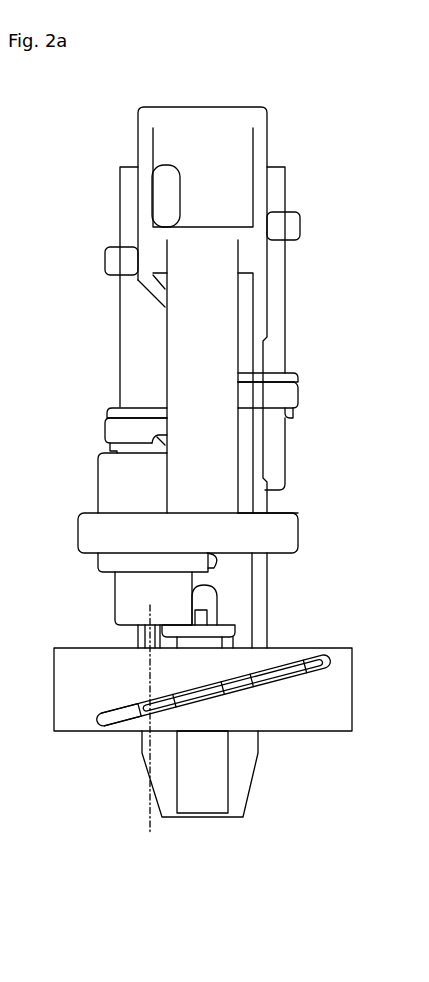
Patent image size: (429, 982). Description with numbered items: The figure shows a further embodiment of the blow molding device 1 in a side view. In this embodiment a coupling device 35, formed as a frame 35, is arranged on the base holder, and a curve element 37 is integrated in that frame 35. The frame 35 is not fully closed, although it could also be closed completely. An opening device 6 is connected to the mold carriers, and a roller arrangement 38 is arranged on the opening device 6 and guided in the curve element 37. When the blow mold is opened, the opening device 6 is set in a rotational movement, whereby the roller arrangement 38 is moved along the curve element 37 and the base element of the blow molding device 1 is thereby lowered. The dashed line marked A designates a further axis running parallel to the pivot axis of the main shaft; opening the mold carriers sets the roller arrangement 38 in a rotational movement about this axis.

The blow molding device 1 is at (214, 473).
The opening device 6 is at (138, 586).
The coupling device 35 is at (305, 708).
The curve element 37 is at (333, 656).
The roller arrangement 38 is at (140, 710).